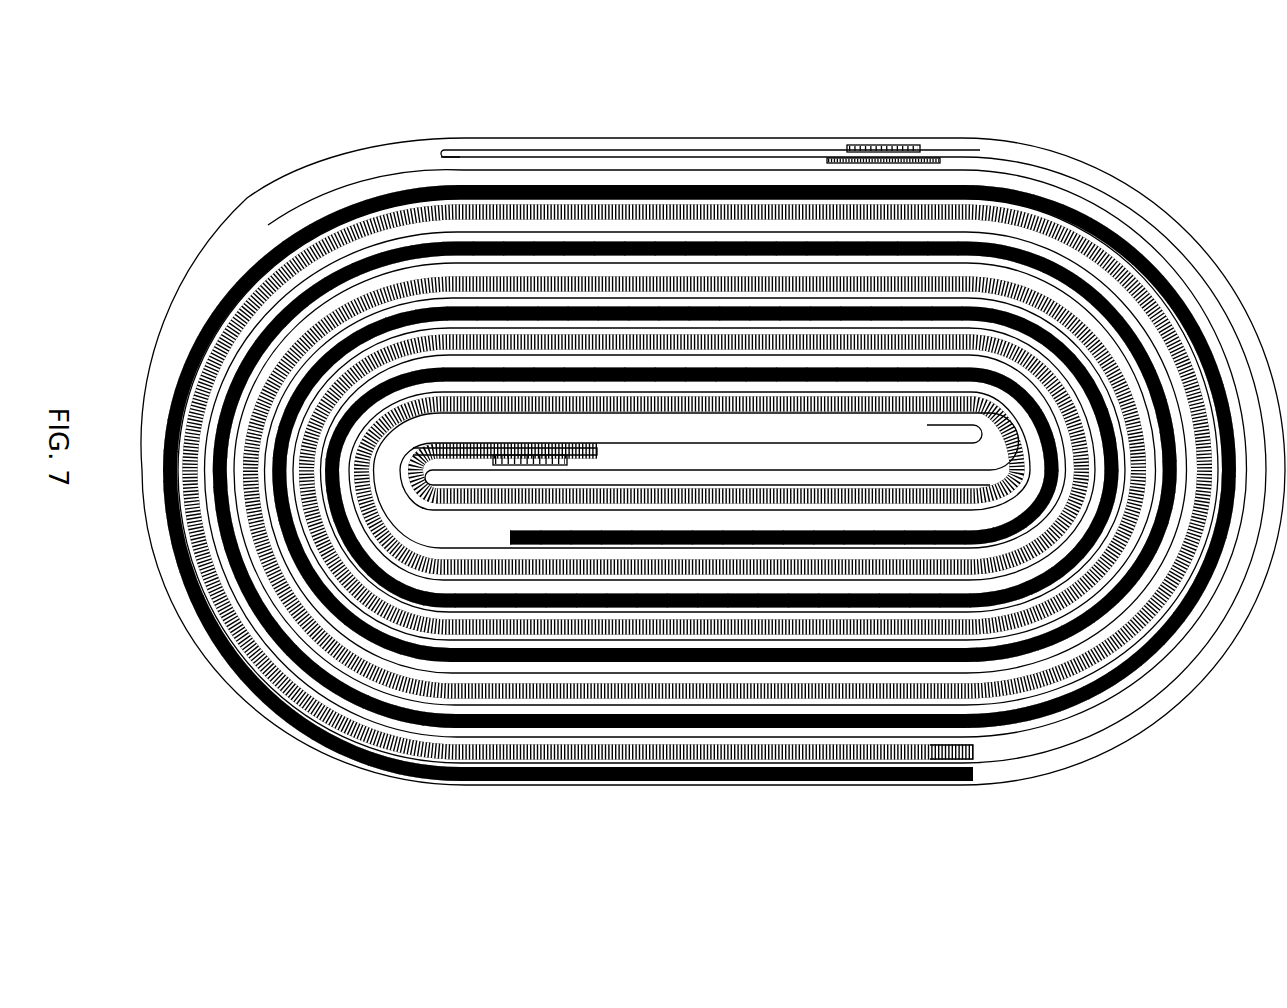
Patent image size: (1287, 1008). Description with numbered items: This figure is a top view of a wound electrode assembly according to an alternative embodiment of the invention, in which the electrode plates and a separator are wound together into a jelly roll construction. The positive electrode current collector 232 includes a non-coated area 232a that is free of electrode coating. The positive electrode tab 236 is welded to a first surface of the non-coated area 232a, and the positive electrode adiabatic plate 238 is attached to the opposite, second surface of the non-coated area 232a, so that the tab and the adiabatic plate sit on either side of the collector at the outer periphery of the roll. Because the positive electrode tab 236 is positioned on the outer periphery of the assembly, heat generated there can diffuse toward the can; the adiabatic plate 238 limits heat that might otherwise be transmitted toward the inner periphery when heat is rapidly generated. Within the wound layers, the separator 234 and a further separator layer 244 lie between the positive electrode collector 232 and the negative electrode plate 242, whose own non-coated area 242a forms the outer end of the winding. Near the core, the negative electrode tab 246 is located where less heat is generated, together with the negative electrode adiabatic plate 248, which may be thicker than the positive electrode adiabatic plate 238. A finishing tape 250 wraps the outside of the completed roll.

The positive electrode current collector 232 is at (1060, 217).
The non-coated area 232a is at (970, 152).
The separator 234 is at (1105, 245).
The positive electrode tab 236 is at (887, 145).
The positive electrode adiabatic plate 238 is at (831, 157).
The second electrode plate 242 is at (902, 762).
The second uncoated region 242a is at (958, 763).
The second separator 244 is at (716, 762).
The negative electrode tab 246 is at (568, 460).
The negative electrode adiabatic plate 248 is at (532, 448).
The finishing tape 250 is at (1037, 140).